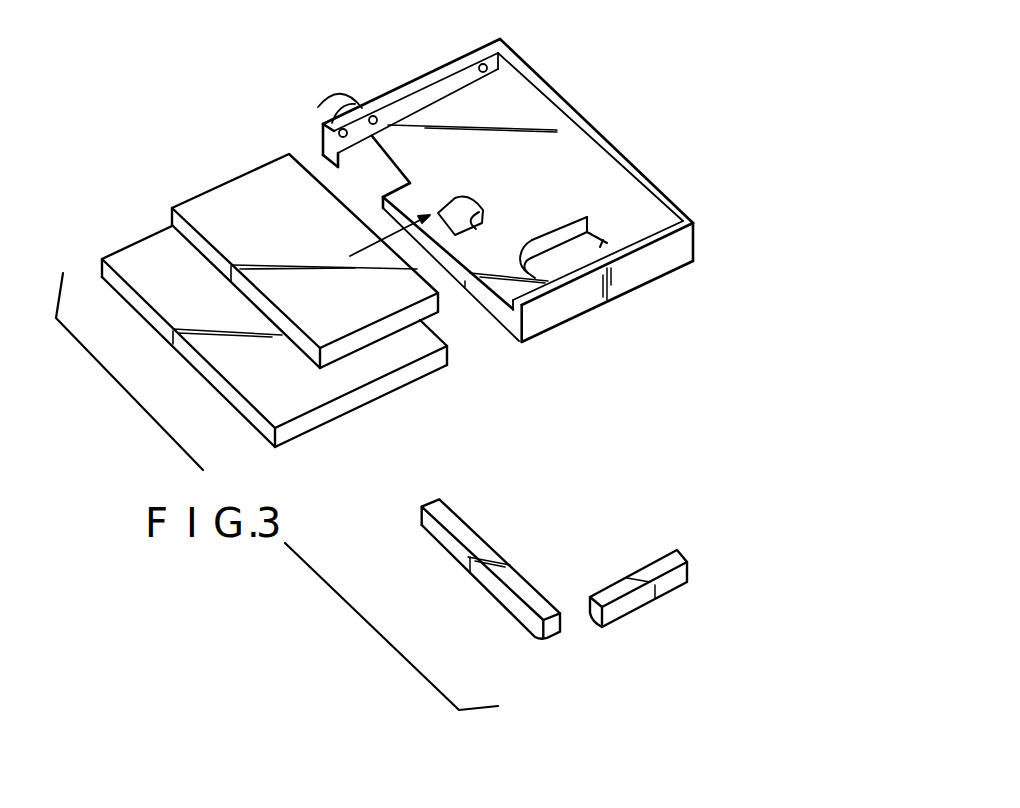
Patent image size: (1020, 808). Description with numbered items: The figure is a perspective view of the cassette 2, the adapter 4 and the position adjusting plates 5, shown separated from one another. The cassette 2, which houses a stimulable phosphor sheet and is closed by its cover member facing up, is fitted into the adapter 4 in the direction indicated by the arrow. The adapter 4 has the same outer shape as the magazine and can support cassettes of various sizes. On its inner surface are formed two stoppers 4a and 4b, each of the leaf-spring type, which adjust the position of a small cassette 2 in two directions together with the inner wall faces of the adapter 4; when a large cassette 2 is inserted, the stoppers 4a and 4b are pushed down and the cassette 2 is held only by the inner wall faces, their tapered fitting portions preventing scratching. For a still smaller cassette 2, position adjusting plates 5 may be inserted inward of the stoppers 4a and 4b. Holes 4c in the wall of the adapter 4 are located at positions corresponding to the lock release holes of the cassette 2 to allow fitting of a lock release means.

The cassette 2 is at (293, 333).
The adapter 4 is at (614, 137).
The stopper 4a is at (555, 230).
The stopper 4b is at (460, 209).
The hole 4c is at (318, 107).
The position adjusting plate 5 is at (490, 553).